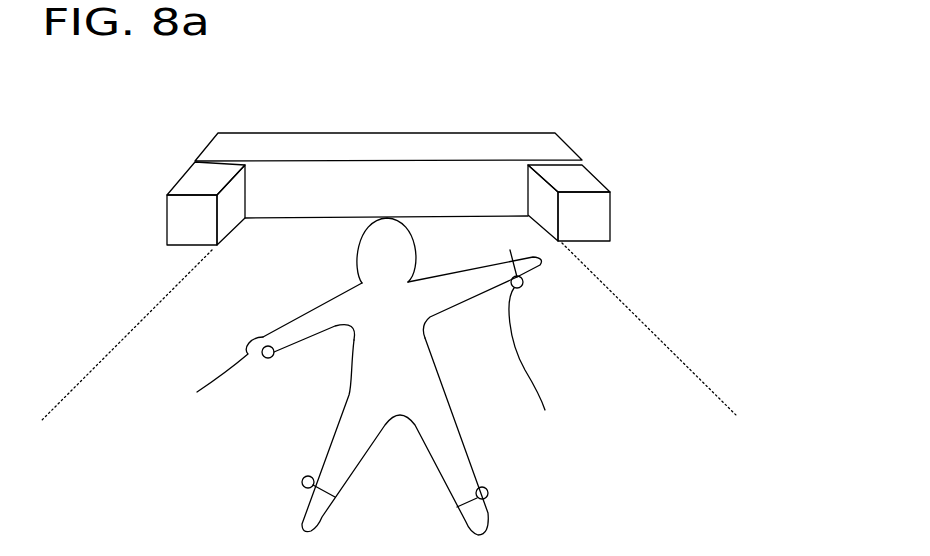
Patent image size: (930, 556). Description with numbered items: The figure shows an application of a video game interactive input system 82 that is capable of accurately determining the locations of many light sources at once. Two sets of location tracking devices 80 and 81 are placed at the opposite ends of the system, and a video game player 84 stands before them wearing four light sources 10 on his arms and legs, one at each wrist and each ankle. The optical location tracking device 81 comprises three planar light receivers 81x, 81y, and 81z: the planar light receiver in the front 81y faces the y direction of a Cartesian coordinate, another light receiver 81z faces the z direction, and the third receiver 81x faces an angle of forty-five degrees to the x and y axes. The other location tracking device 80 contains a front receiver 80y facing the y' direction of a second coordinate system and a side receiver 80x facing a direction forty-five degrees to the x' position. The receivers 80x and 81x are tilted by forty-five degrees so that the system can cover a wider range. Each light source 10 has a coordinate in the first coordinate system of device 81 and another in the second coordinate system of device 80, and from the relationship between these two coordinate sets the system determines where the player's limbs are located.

The light source 10 is at (303, 478).
The location tracking device 80 is at (192, 205).
The side receiver 80x is at (245, 217).
The front receiver 80y is at (175, 210).
The optical location tracking device 81 is at (585, 208).
The planar light receiver 81x is at (547, 198).
The planar light receiver 81y is at (600, 218).
The planar light receiver 81z is at (573, 178).
The video game interactive input system 82 is at (411, 150).
The video game player 84 is at (377, 355).